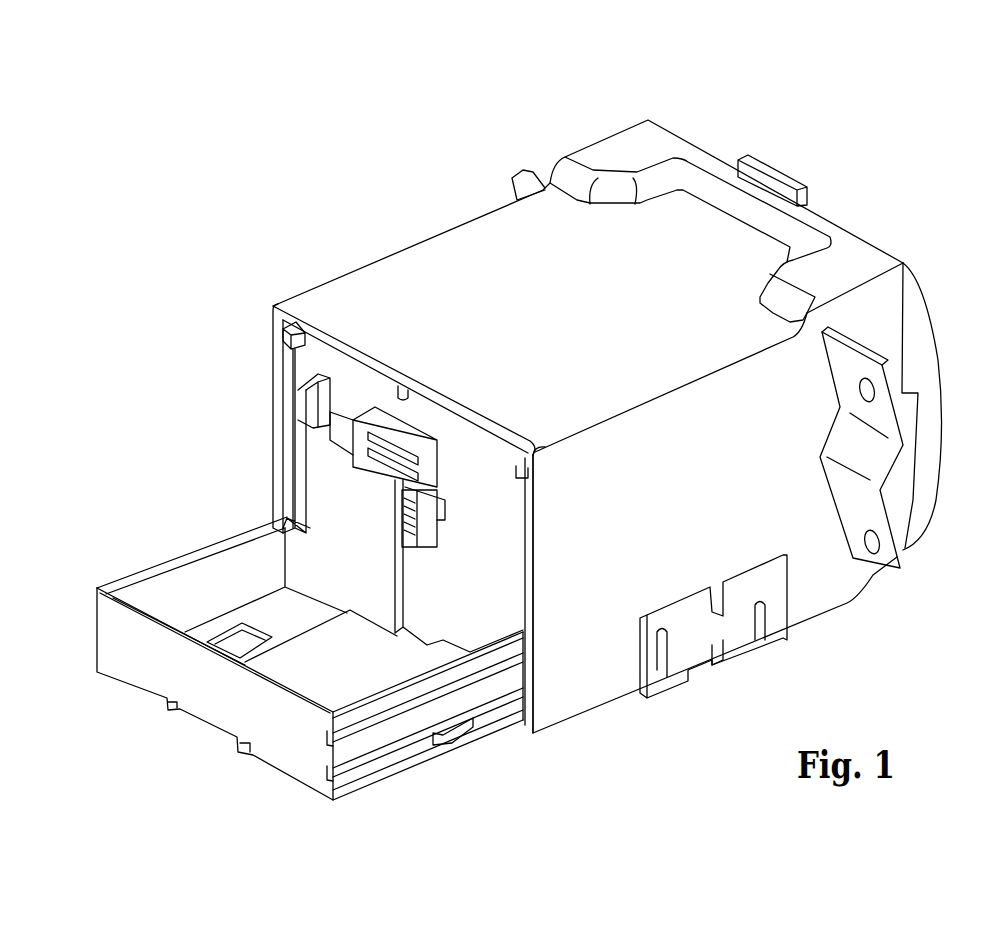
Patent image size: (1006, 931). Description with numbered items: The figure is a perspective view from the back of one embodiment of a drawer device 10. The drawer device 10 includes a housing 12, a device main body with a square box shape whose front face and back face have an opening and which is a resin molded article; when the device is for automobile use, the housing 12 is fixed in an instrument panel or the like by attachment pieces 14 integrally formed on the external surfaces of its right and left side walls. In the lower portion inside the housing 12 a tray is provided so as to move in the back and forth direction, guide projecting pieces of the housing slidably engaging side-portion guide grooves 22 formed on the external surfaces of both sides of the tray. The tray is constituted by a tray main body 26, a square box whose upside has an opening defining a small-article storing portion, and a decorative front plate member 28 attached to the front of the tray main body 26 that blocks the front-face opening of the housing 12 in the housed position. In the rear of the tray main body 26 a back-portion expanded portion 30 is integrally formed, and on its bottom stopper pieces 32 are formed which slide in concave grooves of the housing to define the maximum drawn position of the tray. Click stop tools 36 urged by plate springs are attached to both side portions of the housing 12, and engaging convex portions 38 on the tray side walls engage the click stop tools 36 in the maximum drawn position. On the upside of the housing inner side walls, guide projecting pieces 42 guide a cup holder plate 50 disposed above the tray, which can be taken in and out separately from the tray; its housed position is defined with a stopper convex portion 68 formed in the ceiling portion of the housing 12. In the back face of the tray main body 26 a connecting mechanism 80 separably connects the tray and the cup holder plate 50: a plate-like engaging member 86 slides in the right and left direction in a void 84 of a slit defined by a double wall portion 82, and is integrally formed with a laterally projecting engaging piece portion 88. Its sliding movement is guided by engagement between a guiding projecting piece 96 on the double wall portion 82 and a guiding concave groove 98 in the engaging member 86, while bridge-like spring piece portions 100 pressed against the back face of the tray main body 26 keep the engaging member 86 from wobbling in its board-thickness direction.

The drawer device 10 is at (630, 108).
The housing 12 is at (437, 266).
The attachment piece 14 is at (518, 172).
The side-portion guide groove 22 is at (502, 663).
The tray main body 26 is at (508, 556).
The decorative front plate member 28 is at (925, 345).
The back-portion expanded portion 30 is at (338, 688).
The stopper piece 32 is at (220, 643).
The click stop tool 36 is at (768, 642).
The engaging convex portion 38 is at (455, 745).
The guide projecting piece 42 is at (286, 338).
The cup holder plate 50 is at (487, 438).
The stopper convex portion 68 is at (401, 384).
The connecting mechanism 80 is at (362, 420).
The double wall portion 82 is at (327, 428).
The void 84 is at (358, 455).
The engaging member 86 is at (437, 497).
The engaging piece portion 88 is at (311, 395).
The guiding projecting piece 96 is at (404, 535).
The guiding concave groove 98 is at (420, 510).
The bridge-like spring piece portion 100 is at (406, 577).